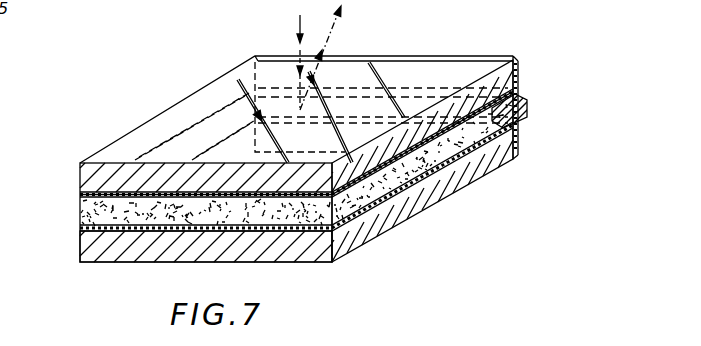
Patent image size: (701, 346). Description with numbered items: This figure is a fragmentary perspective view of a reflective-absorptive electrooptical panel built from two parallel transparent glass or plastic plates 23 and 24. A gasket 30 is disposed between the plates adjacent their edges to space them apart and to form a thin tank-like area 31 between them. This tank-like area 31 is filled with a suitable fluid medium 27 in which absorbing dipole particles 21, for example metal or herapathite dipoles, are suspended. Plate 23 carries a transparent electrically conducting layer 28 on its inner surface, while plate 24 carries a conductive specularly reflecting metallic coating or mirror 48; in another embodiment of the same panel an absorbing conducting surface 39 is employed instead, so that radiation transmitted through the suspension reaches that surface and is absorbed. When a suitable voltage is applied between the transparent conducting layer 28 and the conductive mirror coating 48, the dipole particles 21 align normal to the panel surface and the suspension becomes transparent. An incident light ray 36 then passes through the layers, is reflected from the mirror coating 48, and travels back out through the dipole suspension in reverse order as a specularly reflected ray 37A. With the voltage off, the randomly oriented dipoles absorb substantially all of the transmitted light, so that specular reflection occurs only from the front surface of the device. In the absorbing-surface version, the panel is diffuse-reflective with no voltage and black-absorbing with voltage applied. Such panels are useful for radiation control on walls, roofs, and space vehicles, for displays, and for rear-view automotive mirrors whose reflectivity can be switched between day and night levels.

The dipole particles 21 is at (200, 227).
The transparent sheet 23 is at (80, 171).
The transparent sheet 24 is at (86, 257).
The fluid 27 is at (157, 215).
The transparent conducting layer 28 is at (80, 194).
The gasket 30 is at (524, 90).
The tank-like area 31 is at (368, 203).
The light ray 36 is at (298, 36).
The reflected light 37A is at (337, 27).
The absorbing conducting surface 39 is at (80, 229).
The conductive mirror coating 48 is at (80, 228).